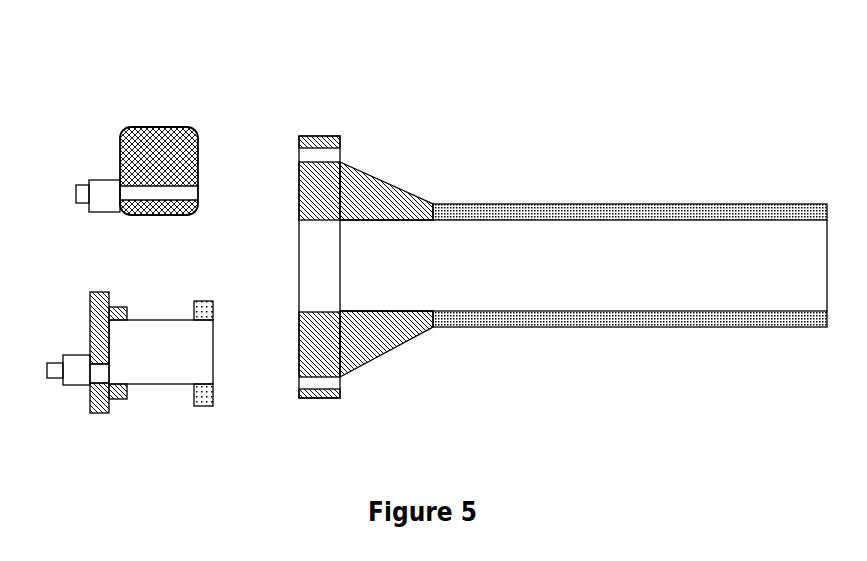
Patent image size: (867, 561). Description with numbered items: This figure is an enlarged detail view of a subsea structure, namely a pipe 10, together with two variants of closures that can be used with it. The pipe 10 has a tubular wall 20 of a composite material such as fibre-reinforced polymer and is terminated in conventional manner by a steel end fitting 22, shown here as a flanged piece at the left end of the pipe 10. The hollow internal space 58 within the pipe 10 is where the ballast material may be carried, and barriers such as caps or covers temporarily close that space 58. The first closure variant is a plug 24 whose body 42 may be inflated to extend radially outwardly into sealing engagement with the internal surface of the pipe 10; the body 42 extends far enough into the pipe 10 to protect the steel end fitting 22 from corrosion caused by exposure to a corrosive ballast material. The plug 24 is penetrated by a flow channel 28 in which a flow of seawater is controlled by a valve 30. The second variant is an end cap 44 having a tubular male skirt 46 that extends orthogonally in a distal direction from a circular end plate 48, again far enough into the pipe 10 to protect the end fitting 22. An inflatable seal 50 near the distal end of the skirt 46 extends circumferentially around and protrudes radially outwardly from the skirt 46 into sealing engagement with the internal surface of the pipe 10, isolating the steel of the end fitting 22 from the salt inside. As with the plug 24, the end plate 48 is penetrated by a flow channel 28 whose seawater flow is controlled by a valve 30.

The pipe 10 is at (566, 172).
The tubular wall 20 is at (673, 215).
The end fitting 22 is at (332, 138).
The plug 24 is at (160, 84).
The flow channel 28 is at (187, 195).
The valve 30 is at (102, 192).
The body 42 is at (138, 143).
The end cap 44 is at (169, 448).
The tubular male skirt 46 is at (152, 340).
The circular end plate 48 is at (92, 302).
The inflatable seal 50 is at (213, 406).
The space 58 is at (741, 258).